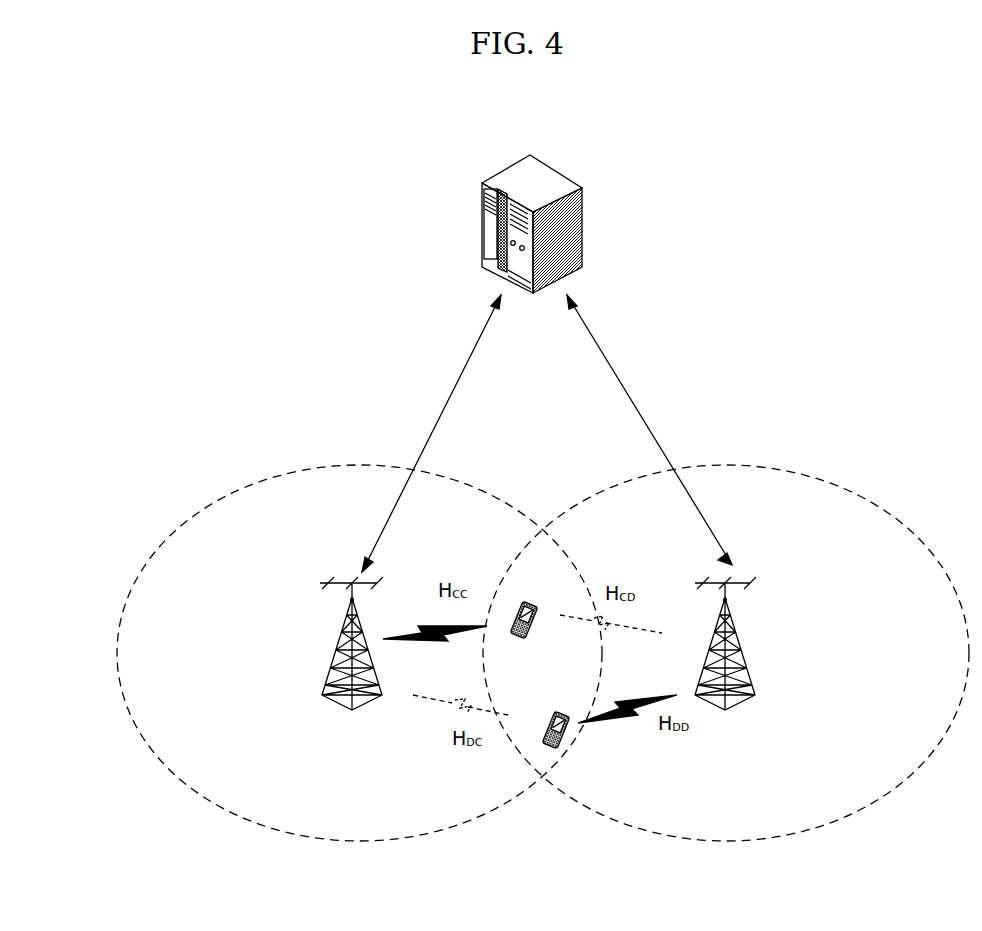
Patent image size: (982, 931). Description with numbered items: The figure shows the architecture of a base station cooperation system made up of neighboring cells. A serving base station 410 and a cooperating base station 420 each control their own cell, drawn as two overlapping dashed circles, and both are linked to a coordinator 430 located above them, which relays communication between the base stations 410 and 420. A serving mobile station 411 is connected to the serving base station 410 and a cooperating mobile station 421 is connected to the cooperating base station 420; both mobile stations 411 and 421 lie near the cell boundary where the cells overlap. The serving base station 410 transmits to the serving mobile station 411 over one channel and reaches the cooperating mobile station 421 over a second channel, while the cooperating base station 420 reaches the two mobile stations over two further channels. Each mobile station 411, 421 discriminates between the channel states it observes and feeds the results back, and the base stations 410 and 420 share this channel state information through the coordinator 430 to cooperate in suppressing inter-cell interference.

The serving base station 410 is at (320, 583).
The serving mobile station 411 is at (517, 603).
The cooperating base station 420 is at (750, 583).
The cooperating mobile station 421 is at (561, 744).
The coordinator 430 is at (555, 170).